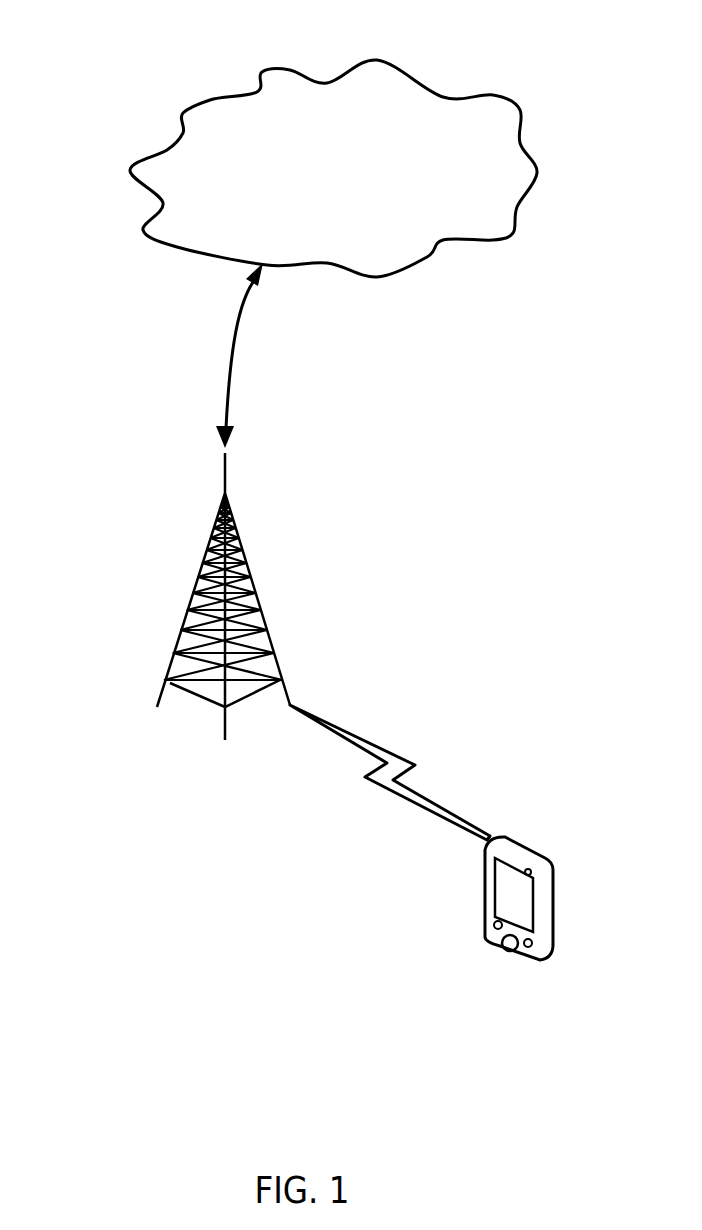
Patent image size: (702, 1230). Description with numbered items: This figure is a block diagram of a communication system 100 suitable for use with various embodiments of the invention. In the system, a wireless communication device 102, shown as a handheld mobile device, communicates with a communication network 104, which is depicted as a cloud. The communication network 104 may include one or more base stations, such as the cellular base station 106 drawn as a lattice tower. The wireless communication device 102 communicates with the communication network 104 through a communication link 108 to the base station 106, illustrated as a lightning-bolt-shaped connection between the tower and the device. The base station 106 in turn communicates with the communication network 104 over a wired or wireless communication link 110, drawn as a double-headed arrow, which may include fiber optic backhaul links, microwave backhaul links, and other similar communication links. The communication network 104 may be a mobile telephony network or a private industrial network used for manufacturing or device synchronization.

The communication system 100 is at (242, 958).
The wireless communication device 102 is at (513, 960).
The communication network 104 is at (405, 63).
The cellular base station 106 is at (142, 602).
The communication link 108 is at (370, 740).
The wired or wireless communication link 110 is at (230, 340).